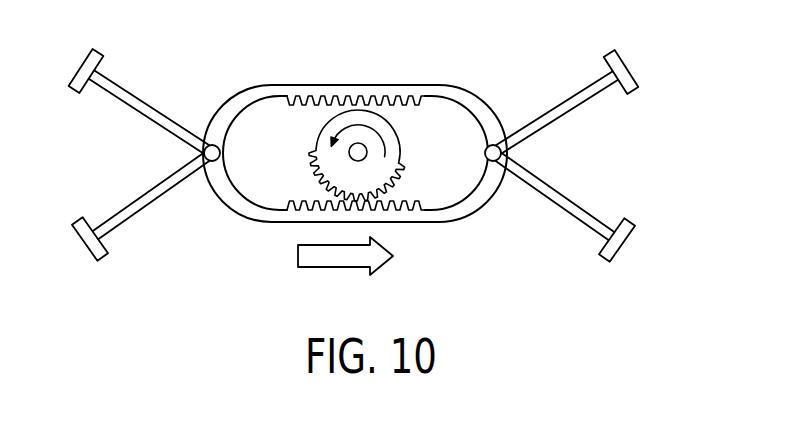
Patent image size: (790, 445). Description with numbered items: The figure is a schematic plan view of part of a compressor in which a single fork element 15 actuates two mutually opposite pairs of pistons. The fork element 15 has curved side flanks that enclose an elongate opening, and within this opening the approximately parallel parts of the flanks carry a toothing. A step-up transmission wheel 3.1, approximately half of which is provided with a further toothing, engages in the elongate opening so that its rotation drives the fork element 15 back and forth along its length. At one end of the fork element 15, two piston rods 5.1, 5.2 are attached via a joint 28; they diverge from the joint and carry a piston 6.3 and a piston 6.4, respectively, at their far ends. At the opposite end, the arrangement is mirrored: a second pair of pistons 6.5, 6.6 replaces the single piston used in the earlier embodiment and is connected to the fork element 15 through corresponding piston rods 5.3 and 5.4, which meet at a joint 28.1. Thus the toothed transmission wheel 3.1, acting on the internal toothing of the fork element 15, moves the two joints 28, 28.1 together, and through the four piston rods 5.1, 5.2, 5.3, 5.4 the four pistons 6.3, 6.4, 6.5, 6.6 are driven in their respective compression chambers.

The fork element 15 is at (342, 87).
The step-up transmission wheel 3.1 is at (385, 128).
The piston rod 5.1 is at (147, 110).
The piston rod 5.2 is at (142, 200).
The piston rod 5.3 is at (567, 110).
The piston rod 5.4 is at (548, 187).
The piston 6.3 is at (83, 73).
The piston 6.4 is at (90, 237).
The piston 6.5 is at (622, 70).
The piston 6.6 is at (618, 238).
The joint 28 is at (209, 163).
The joint 28.1 is at (498, 163).